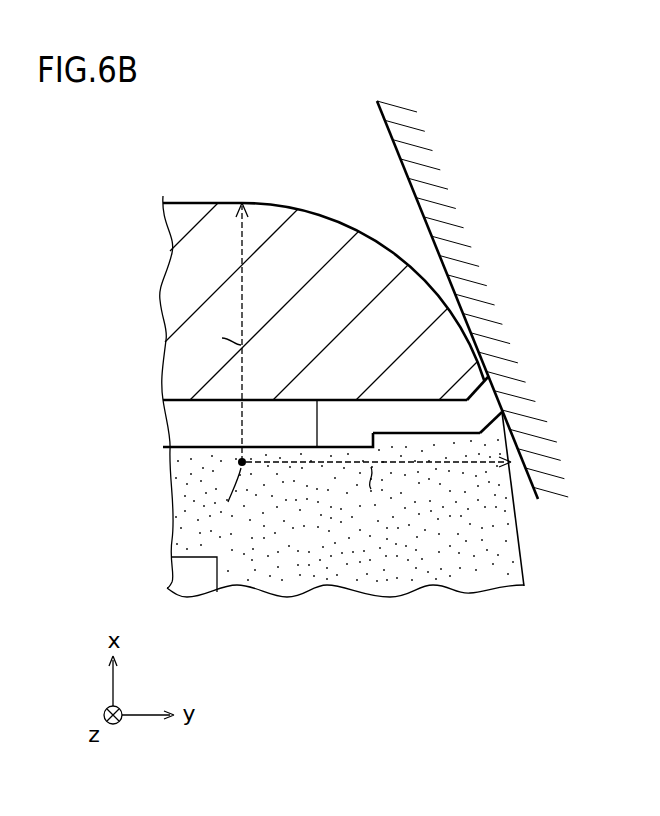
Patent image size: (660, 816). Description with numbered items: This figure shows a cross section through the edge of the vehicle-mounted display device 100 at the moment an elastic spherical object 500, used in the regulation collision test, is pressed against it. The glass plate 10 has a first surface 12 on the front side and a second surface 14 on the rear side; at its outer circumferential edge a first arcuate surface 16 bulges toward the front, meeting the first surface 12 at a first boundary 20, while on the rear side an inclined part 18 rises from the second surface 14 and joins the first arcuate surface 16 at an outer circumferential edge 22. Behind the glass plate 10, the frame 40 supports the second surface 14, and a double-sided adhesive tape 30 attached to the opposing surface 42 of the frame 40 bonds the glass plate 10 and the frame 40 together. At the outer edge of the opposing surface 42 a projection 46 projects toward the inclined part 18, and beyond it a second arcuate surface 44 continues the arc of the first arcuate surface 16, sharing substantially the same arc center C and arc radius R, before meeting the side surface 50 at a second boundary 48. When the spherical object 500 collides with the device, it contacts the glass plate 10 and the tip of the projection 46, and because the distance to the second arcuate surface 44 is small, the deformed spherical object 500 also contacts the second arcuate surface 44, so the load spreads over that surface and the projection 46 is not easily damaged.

The vehicle-mounted display device 100 is at (328, 722).
The glass plate 10 is at (167, 340).
The first surface 12 is at (203, 202).
The second surface 14 is at (172, 412).
The first arcuate surface 16 is at (380, 243).
The inclined part 18 is at (478, 392).
The first boundary 20 is at (243, 202).
The outer circumferential edge 22 is at (416, 433).
The double-sided adhesive tape 30 is at (178, 434).
The frame 40 is at (305, 593).
The opposing surface 42 is at (343, 447).
The second arcuate surface 44 is at (515, 437).
The projection 46 is at (515, 430).
The second boundary 48 is at (513, 465).
The side surface 50 is at (525, 548).
The spherical object 500 is at (434, 177).